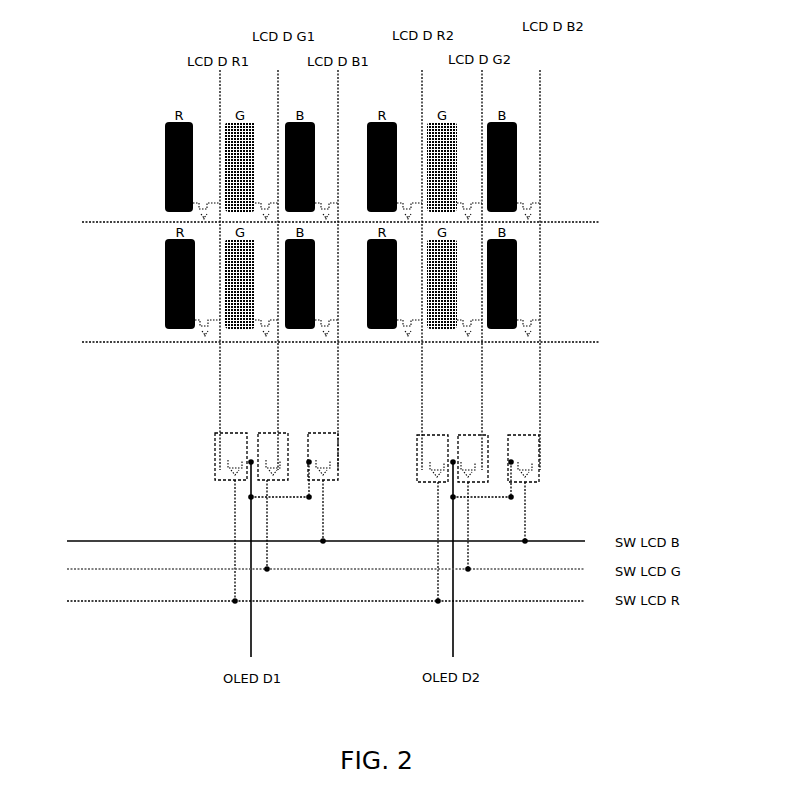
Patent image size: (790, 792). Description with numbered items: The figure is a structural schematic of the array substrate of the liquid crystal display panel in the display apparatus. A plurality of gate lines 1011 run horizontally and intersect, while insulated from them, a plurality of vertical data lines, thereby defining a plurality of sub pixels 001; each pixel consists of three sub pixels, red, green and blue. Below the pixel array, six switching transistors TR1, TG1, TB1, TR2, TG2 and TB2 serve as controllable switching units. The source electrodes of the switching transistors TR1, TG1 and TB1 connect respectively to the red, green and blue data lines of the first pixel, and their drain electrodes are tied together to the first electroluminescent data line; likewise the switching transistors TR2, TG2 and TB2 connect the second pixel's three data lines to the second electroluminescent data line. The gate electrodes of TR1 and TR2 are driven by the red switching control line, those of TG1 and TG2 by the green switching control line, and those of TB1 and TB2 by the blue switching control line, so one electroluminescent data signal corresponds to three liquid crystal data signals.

The gate line 1011 is at (366, 283).
The sub pixel 001 is at (527, 273).
The switching transistor TR1 is at (231, 456).
The switching transistor TG1 is at (273, 456).
The switching transistor TB1 is at (323, 456).
The switching transistor TR2 is at (432, 458).
The switching transistor TG2 is at (473, 458).
The switching transistor TB2 is at (523, 458).